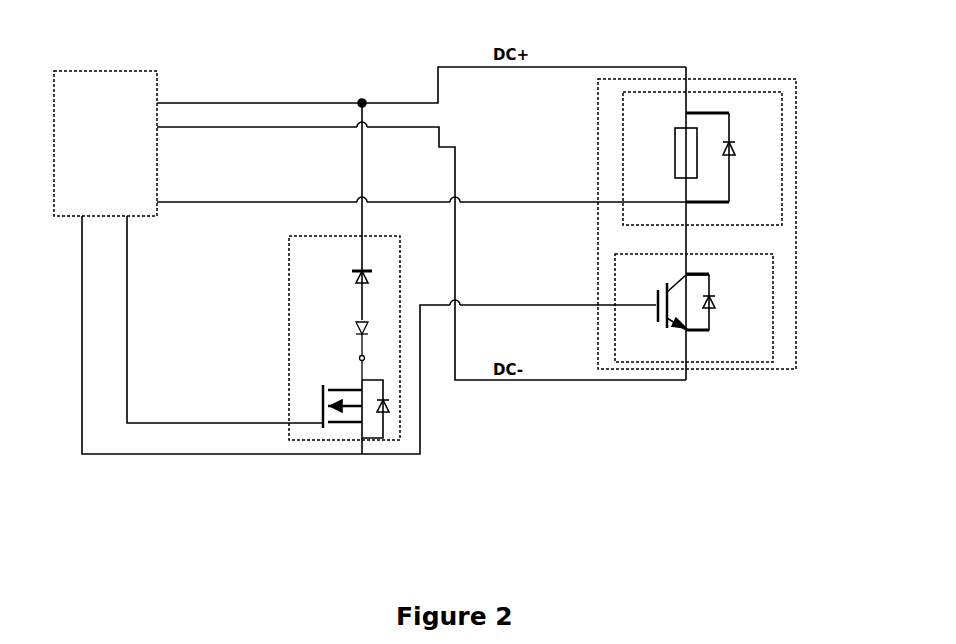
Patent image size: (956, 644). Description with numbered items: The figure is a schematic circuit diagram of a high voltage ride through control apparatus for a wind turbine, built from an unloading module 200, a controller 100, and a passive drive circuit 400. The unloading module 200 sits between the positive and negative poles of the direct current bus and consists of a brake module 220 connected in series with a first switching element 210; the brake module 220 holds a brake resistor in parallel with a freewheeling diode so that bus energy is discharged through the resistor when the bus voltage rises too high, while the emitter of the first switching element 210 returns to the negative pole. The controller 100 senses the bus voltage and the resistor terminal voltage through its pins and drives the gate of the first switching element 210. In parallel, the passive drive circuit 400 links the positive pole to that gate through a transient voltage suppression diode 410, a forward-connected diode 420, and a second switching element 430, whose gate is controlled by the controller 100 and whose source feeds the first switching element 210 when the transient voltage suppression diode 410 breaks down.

The controller 100 is at (54, 71).
The unloading module 200 is at (797, 103).
The first switching element 210 is at (775, 290).
The brake module 220 is at (700, 92).
The passive drive circuit 400 is at (282, 312).
The transient voltage suppression diode 410 is at (355, 272).
The diode 420 is at (367, 330).
The second switching element 430 is at (372, 416).